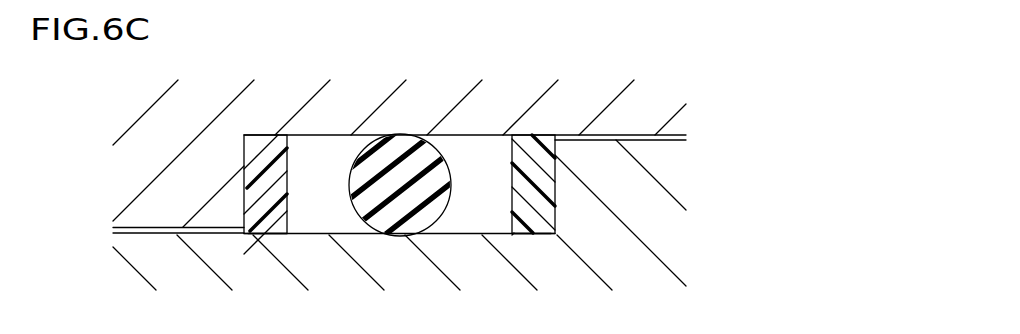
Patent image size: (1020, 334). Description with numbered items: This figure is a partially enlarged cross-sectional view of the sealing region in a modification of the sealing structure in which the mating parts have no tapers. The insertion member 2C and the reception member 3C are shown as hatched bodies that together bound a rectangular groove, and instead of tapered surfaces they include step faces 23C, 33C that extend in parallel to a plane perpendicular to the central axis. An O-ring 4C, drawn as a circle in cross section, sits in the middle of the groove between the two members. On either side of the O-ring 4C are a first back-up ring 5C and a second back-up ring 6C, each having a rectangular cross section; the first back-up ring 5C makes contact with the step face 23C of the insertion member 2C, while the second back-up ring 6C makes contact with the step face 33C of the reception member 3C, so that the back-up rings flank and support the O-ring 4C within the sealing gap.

The insertion member 2C is at (452, 235).
The reception member 3C is at (473, 134).
The O-ring 4C is at (393, 148).
The first back-up ring 5C is at (513, 233).
The second back-up ring 6C is at (279, 233).
The step face 23C is at (555, 191).
The step face 33C is at (243, 183).